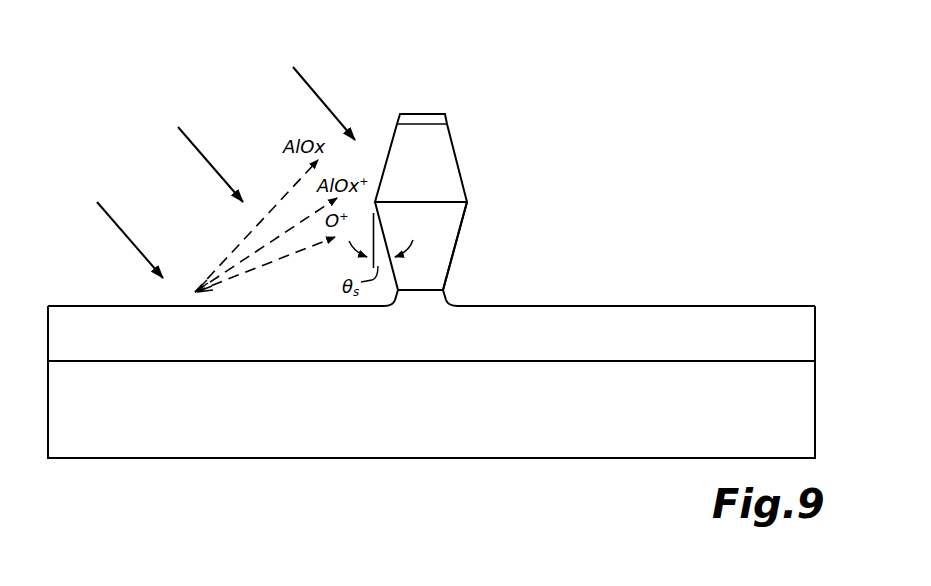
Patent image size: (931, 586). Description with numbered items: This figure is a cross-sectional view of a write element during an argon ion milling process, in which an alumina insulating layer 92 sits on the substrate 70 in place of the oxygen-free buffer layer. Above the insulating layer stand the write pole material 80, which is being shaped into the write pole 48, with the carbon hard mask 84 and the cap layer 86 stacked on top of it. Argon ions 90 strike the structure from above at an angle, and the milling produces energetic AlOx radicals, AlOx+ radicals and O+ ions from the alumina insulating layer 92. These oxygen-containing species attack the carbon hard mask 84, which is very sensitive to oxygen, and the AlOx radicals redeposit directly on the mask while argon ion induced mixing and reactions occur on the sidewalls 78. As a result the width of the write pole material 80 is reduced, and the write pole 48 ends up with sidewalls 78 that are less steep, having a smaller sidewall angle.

The substrate 70 is at (431, 382).
The alumina insulating layer 92 is at (815, 329).
The carbon hard mask 84 is at (421, 158).
The cap layer 86 is at (438, 117).
The write pole 48 is at (421, 246).
The sidewalls 78 is at (467, 221).
The write pole material 80 is at (438, 263).
The argon ion beam 90 is at (317, 95).